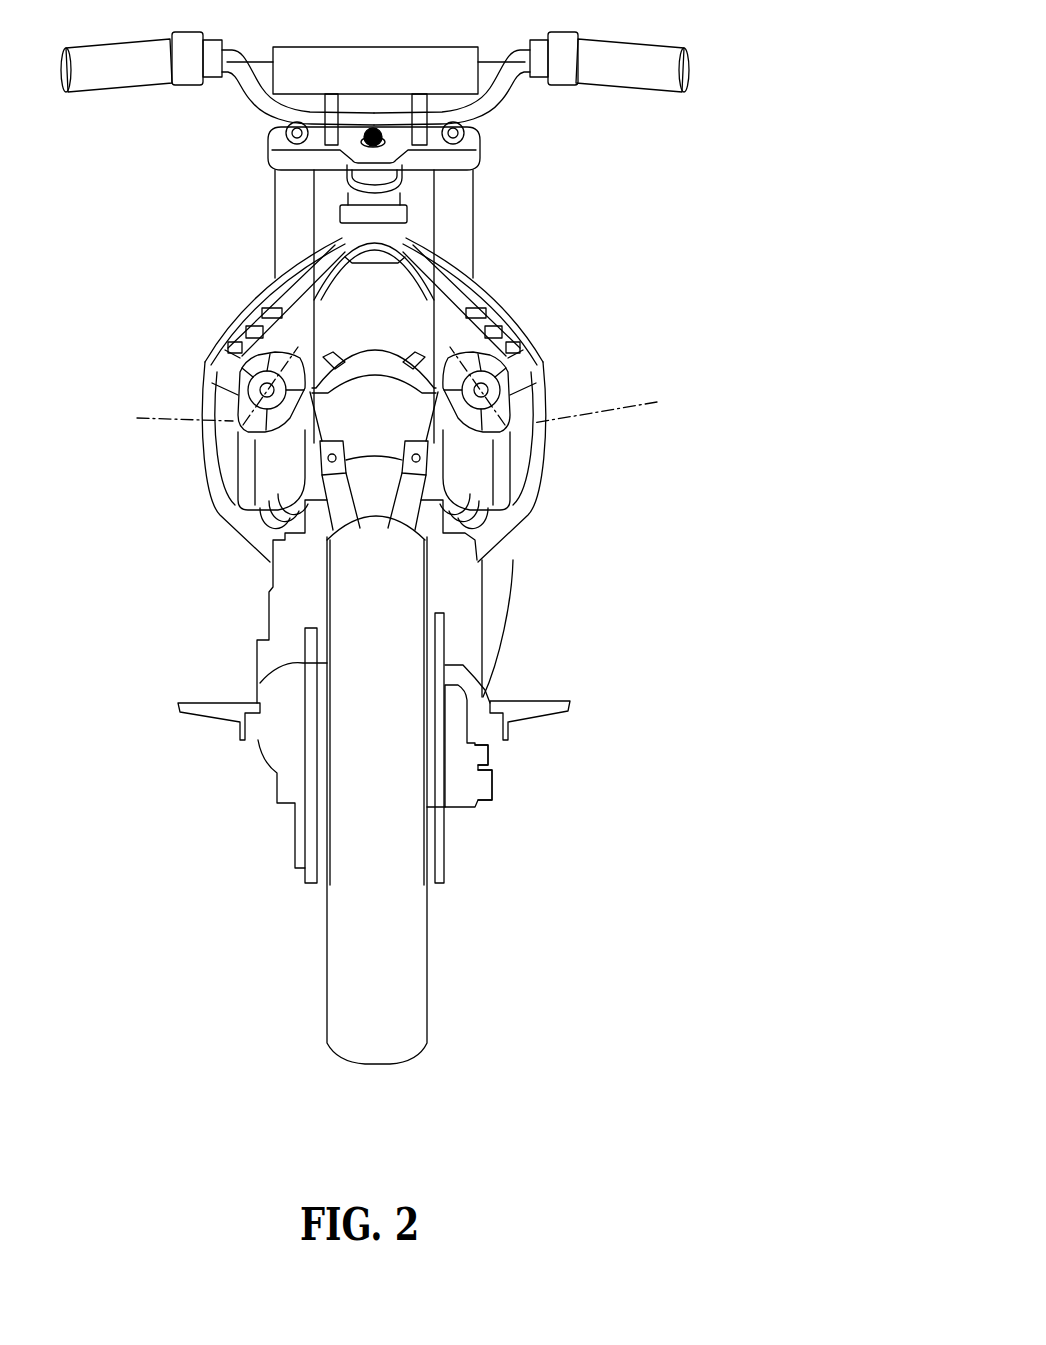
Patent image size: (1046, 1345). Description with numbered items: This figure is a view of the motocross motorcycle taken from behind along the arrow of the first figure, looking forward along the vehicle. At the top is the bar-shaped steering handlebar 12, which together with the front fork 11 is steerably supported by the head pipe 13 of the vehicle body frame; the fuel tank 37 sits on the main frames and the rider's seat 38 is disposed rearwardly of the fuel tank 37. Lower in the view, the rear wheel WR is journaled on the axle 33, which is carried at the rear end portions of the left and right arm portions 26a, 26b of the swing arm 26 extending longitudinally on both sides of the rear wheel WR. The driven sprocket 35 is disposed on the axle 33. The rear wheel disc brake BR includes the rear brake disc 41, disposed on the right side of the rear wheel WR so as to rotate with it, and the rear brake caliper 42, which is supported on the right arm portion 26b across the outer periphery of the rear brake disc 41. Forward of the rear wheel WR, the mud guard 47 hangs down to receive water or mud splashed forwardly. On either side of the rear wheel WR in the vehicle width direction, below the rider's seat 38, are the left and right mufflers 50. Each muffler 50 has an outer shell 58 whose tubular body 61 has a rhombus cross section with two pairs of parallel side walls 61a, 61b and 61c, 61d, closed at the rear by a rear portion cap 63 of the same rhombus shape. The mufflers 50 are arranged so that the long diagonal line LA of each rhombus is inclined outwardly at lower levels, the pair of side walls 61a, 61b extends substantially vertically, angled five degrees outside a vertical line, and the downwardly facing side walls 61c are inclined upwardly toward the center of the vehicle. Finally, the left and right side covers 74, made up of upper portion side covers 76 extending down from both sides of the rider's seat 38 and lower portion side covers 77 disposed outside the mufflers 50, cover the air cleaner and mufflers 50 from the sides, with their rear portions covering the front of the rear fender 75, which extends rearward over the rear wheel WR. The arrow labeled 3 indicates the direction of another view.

The front fork 11 is at (463, 217).
The steering handlebar 12 is at (519, 57).
The head pipe 13 is at (277, 192).
The swing arm 26 is at (270, 772).
The left arm portion 26a is at (280, 745).
The right arm portion 26b is at (480, 685).
The axle 33 is at (491, 783).
The driven sprocket 35 is at (307, 885).
The fuel tank 37 is at (342, 237).
The rider's seat 38 is at (393, 250).
The rear brake disc 41 is at (437, 647).
The rear brake caliper 42 is at (485, 753).
The mud guard 47 is at (368, 507).
The muffler 50 is at (233, 458).
The outer shell 58 is at (247, 513).
The tubular body 61 is at (293, 465).
The side wall 61a is at (340, 380).
The side wall 61b is at (212, 383).
The side wall 61c is at (435, 515).
The side wall 61d is at (225, 350).
The rear portion cap 63 is at (243, 388).
The side cover 74 is at (100, 205).
The rear fender 75 is at (433, 245).
The upper portion side cover 76 is at (262, 296).
The lower portion side cover 77 is at (238, 342).
The rear wheel disc brake BR is at (448, 653).
The long diagonal line LA is at (394, 390).
The rear wheel WR is at (337, 1012).
The view direction of FIG. 3 is at (665, 543).